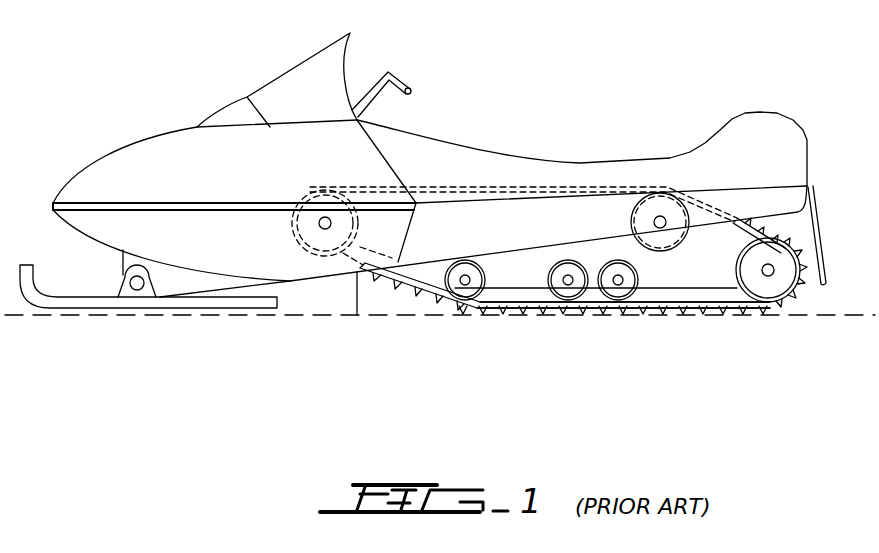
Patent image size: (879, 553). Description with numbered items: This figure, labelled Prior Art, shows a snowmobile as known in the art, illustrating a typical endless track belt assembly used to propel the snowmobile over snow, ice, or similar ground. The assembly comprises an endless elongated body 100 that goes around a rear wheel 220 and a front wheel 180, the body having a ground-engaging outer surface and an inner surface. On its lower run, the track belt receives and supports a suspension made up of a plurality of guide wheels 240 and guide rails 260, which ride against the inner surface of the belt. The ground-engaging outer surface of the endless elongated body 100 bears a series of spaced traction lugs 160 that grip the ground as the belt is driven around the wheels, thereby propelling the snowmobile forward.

The endless elongated body 100 is at (508, 186).
The traction lugs 160 is at (398, 285).
The front wheel 180 is at (302, 255).
The rear wheel 220 is at (787, 259).
The guide wheels 240 is at (465, 260).
The guide rails 260 is at (683, 293).